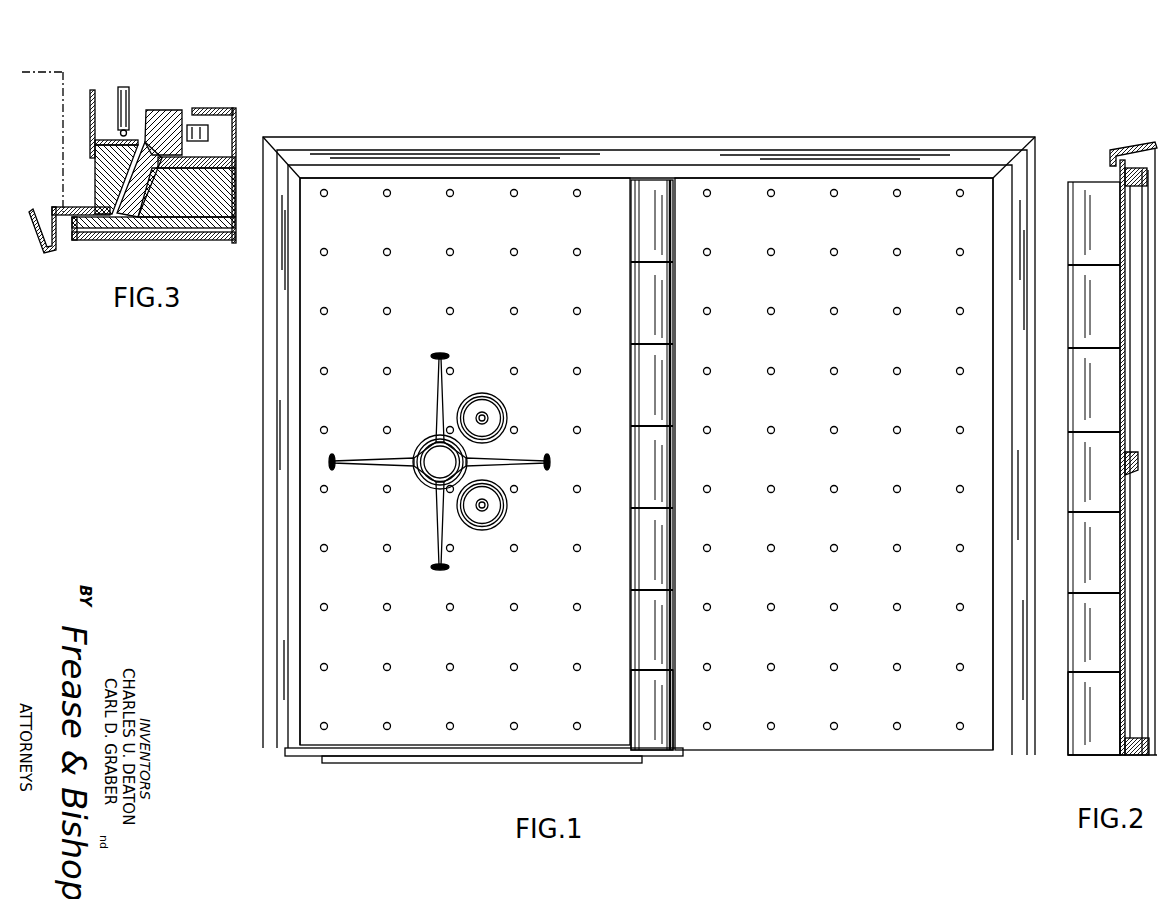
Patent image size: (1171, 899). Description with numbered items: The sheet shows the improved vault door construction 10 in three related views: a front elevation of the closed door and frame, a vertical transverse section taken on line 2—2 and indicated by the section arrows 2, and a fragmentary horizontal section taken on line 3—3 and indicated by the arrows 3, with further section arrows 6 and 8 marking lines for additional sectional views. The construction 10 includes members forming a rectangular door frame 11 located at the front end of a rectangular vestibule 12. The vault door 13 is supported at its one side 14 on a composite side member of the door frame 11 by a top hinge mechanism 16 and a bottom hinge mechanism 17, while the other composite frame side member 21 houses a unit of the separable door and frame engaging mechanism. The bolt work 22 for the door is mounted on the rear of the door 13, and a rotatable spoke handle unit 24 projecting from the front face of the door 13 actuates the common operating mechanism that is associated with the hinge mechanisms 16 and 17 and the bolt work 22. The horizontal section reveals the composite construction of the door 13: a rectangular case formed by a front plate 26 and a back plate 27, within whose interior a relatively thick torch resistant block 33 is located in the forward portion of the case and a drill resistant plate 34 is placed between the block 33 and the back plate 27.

In FIG. 1, the vault door construction 10 is at (258, 519).
In FIG. 3, the vestibule 12 is at (80, 113).
In FIG. 1, the vault door 13 is at (320, 407).
In FIG. 3, the vault door 13 is at (135, 170).
In FIG. 1, the top hinge mechanism 16 is at (662, 233).
In FIG. 2, the top hinge mechanism 16 is at (1095, 200).
In FIG. 1, the bottom hinge mechanism 17 is at (670, 704).
In FIG. 2, the bottom hinge mechanism 17 is at (1080, 724).
In FIG. 3, the composite frame side member 21 is at (100, 210).
In FIG. 3, the bolt work 22 is at (218, 102).
In FIG. 1, the rotatable spoke handle unit 24 is at (407, 468).
In FIG. 3, the front plate 26 is at (163, 224).
In FIG. 3, the back plate 27 is at (153, 148).
In FIG. 3, the torch resistant block 33 is at (211, 205).
In FIG. 3, the drill resistant plate 34 is at (208, 165).
In FIG. 1, the section line 2- 2 is at (838, 137).
In FIG. 1, the section line 3- 3 is at (248, 650).
In FIG. 1, the section line 6- 6 is at (270, 205).
In FIG. 1, the section line 8- 8 is at (455, 110).
In FIG. 1, the door frame 11 is at (660, 114).
In FIG. 1, the side of door 14 is at (660, 578).